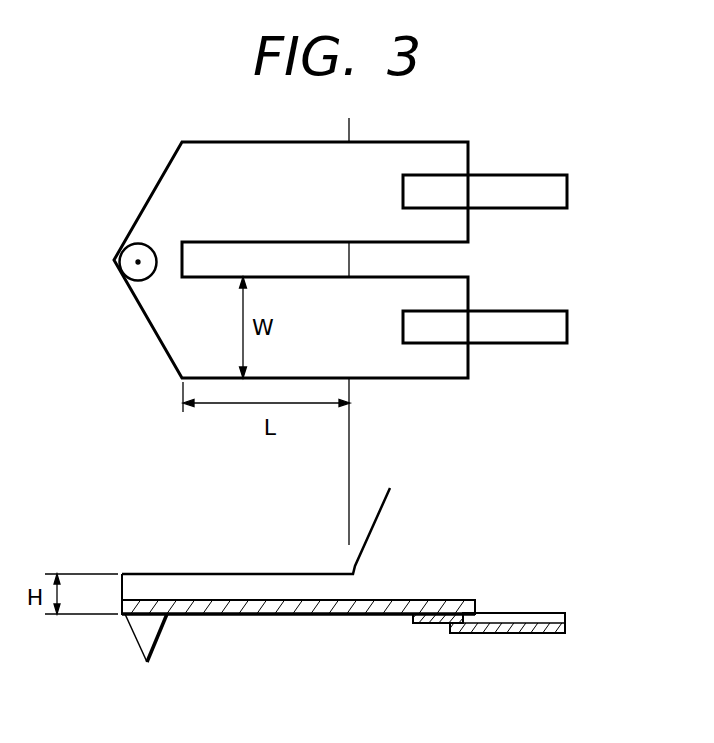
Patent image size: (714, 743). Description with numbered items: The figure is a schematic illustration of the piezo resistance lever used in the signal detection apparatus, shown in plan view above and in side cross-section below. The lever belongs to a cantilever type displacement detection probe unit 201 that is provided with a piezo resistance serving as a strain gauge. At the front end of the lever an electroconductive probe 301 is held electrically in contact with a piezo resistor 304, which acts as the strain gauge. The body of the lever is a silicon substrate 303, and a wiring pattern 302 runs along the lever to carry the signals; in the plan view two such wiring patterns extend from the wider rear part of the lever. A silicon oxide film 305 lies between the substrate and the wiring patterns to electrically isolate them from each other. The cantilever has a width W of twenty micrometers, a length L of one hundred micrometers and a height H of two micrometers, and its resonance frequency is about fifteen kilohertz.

The cantilever type displacement detection probe unit 201 is at (427, 143).
The electroconductive probe 301 is at (128, 243).
The wiring pattern 302 is at (538, 183).
The silicon substrate 303 is at (247, 581).
The piezo resistor 304 is at (122, 609).
The silicon oxide film 305 is at (533, 609).